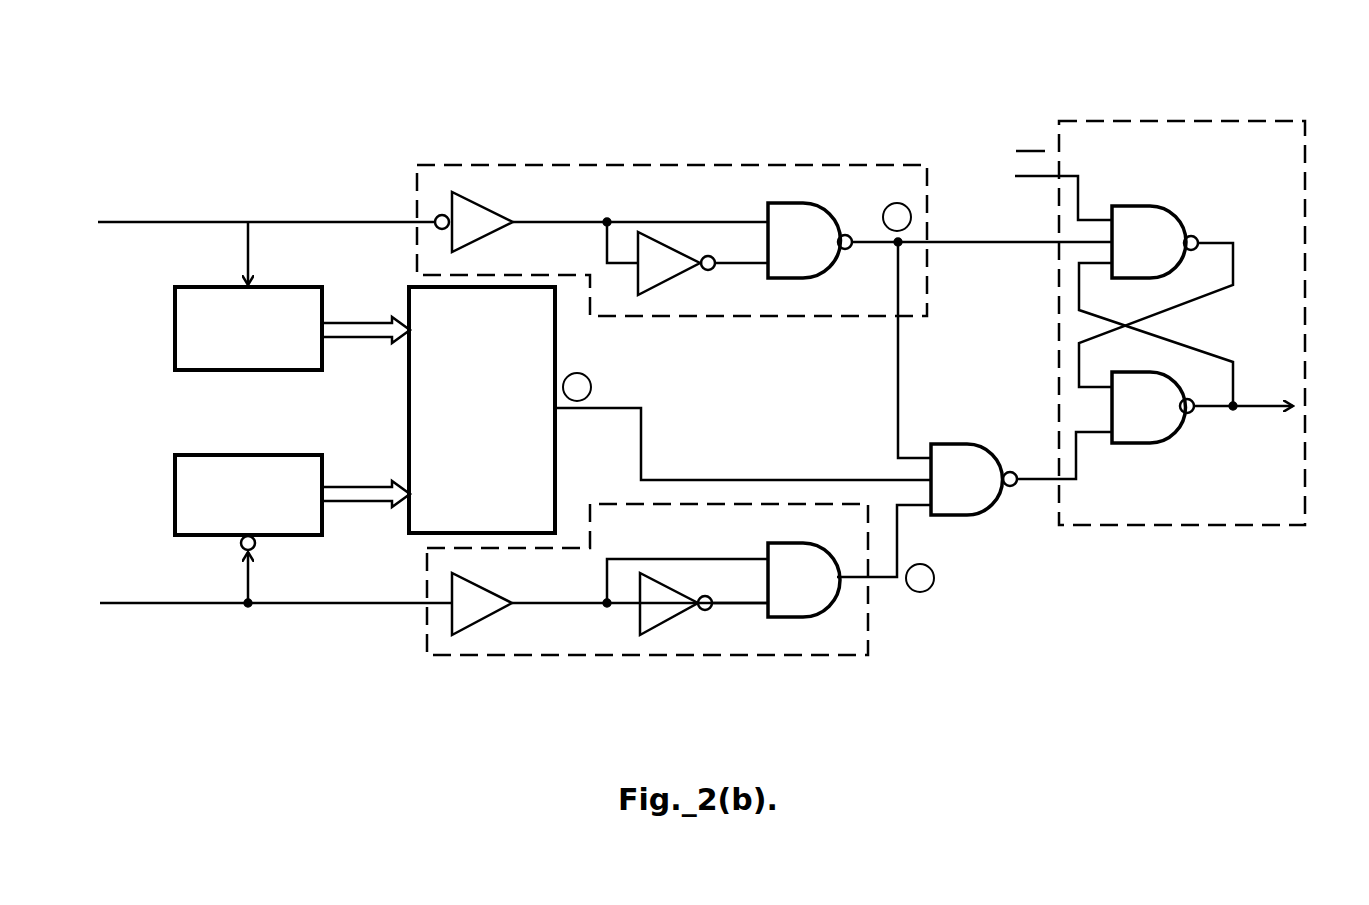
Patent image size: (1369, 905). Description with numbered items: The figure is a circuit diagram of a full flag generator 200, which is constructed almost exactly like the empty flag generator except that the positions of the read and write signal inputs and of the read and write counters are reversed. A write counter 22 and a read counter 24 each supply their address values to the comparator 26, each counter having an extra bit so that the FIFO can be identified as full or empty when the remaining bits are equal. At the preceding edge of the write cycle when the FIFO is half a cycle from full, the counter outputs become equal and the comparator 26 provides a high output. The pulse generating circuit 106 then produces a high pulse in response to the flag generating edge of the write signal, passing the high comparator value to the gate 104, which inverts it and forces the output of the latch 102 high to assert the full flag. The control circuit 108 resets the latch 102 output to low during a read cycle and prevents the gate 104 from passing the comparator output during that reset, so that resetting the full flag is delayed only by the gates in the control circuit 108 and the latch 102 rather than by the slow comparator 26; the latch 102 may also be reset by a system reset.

The full flag generator 200 is at (840, 96).
The control circuit 108 is at (725, 164).
The pulse generating circuit 106 is at (585, 655).
The gate 104 is at (968, 517).
The latch 102 is at (1145, 121).
The read counter 24 is at (175, 328).
The write counter 22 is at (175, 485).
The comparator 26 is at (410, 392).